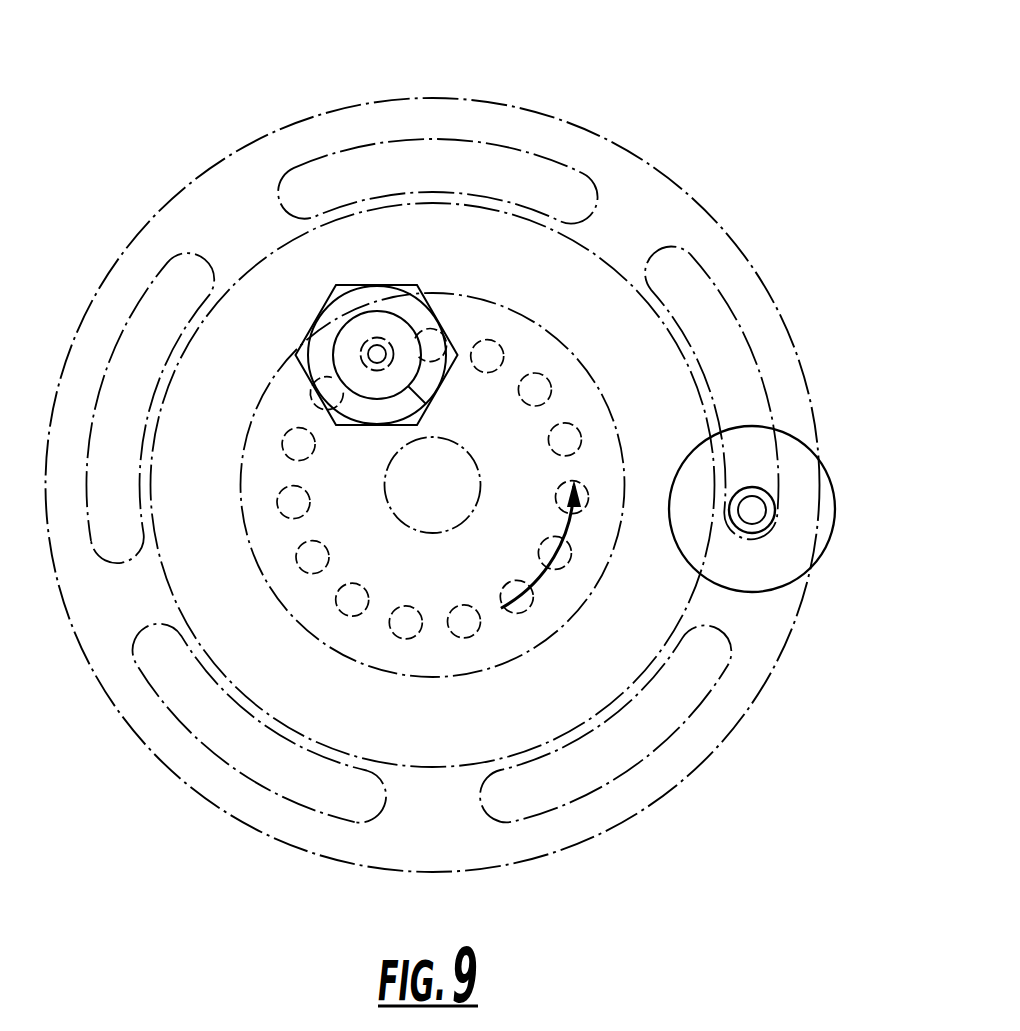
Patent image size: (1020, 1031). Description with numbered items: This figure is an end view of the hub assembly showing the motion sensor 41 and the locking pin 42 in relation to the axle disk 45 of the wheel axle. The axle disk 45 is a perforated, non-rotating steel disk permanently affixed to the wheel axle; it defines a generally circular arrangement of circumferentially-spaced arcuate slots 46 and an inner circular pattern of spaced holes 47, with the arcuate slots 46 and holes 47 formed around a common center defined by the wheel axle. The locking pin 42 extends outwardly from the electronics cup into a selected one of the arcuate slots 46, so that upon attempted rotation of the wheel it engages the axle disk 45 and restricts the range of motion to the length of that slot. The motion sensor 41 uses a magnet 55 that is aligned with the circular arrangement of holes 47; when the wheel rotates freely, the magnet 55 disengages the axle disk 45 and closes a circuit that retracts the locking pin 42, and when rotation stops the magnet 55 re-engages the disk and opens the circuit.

The motion sensor 41 is at (350, 285).
The locking pin 42 is at (771, 496).
The axle disk 45 is at (650, 163).
The arcuate slots 46 is at (713, 357).
The holes 47 is at (524, 376).
The magnet 55 is at (348, 332).